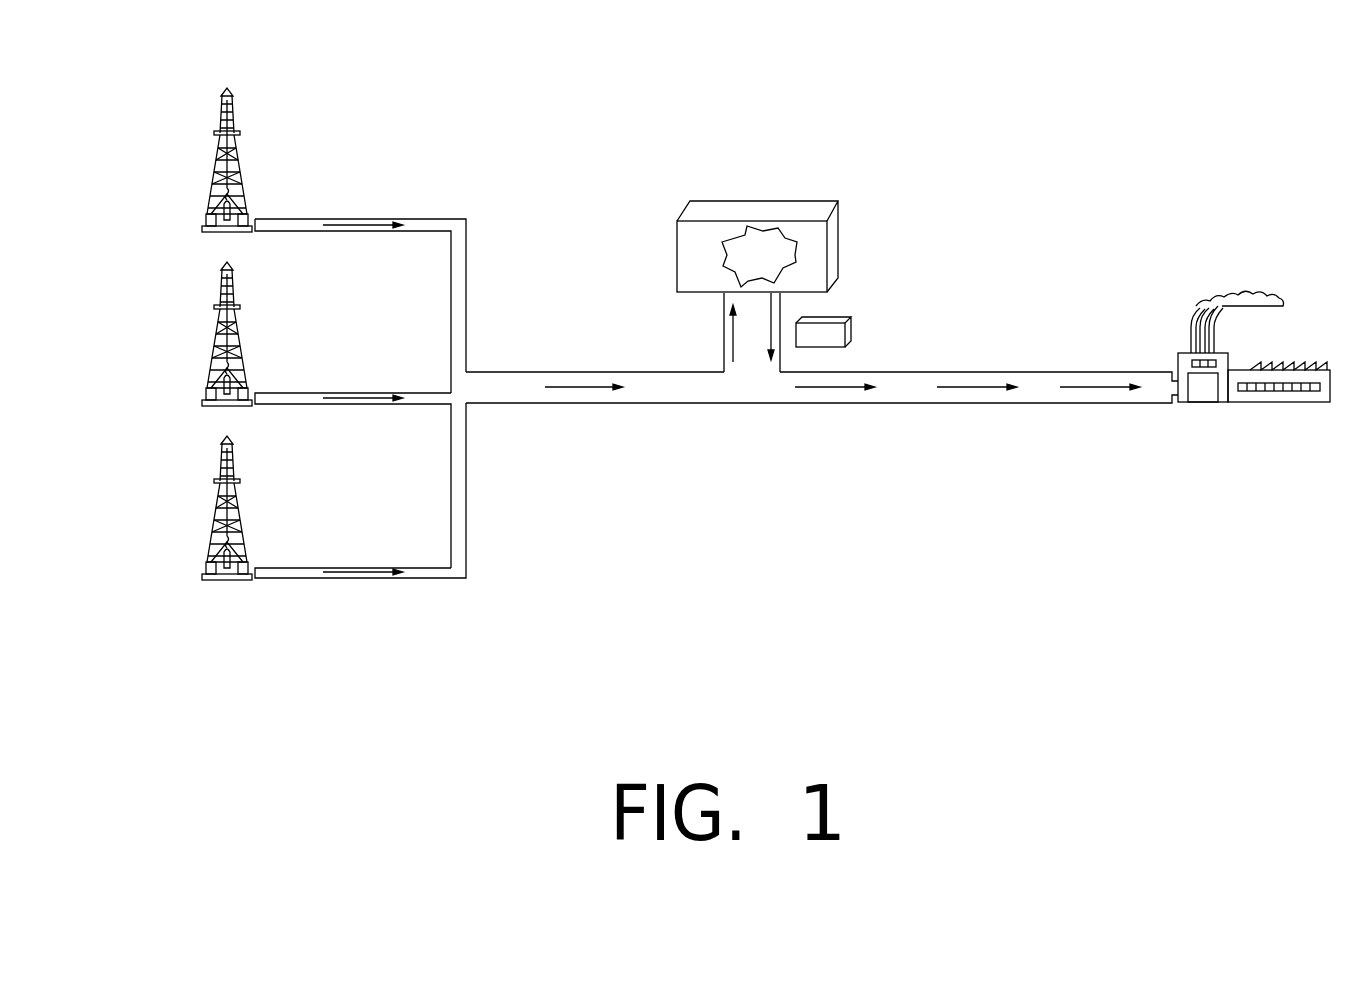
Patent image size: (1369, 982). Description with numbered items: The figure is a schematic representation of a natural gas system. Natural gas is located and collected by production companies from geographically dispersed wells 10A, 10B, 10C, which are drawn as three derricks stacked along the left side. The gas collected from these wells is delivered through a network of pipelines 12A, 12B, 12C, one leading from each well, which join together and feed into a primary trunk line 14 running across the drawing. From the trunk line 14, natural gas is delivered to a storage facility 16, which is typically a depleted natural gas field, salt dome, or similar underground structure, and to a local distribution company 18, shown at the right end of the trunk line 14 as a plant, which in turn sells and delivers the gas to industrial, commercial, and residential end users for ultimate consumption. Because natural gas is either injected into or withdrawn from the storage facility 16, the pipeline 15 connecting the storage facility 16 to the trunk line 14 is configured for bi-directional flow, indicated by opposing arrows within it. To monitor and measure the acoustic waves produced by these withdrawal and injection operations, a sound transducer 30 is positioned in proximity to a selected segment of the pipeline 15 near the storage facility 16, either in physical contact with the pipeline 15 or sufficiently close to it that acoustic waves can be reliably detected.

The well 10A is at (219, 106).
The well 10B is at (218, 280).
The well 10C is at (218, 455).
The pipeline 12A is at (380, 232).
The pipeline 12B is at (377, 405).
The pipeline 12C is at (340, 579).
The primary trunk line 14 is at (630, 398).
The pipeline 15 is at (724, 334).
The storage facility 16 is at (685, 263).
The sound transducer 30 is at (850, 333).
The local distribution company 18 is at (1202, 400).